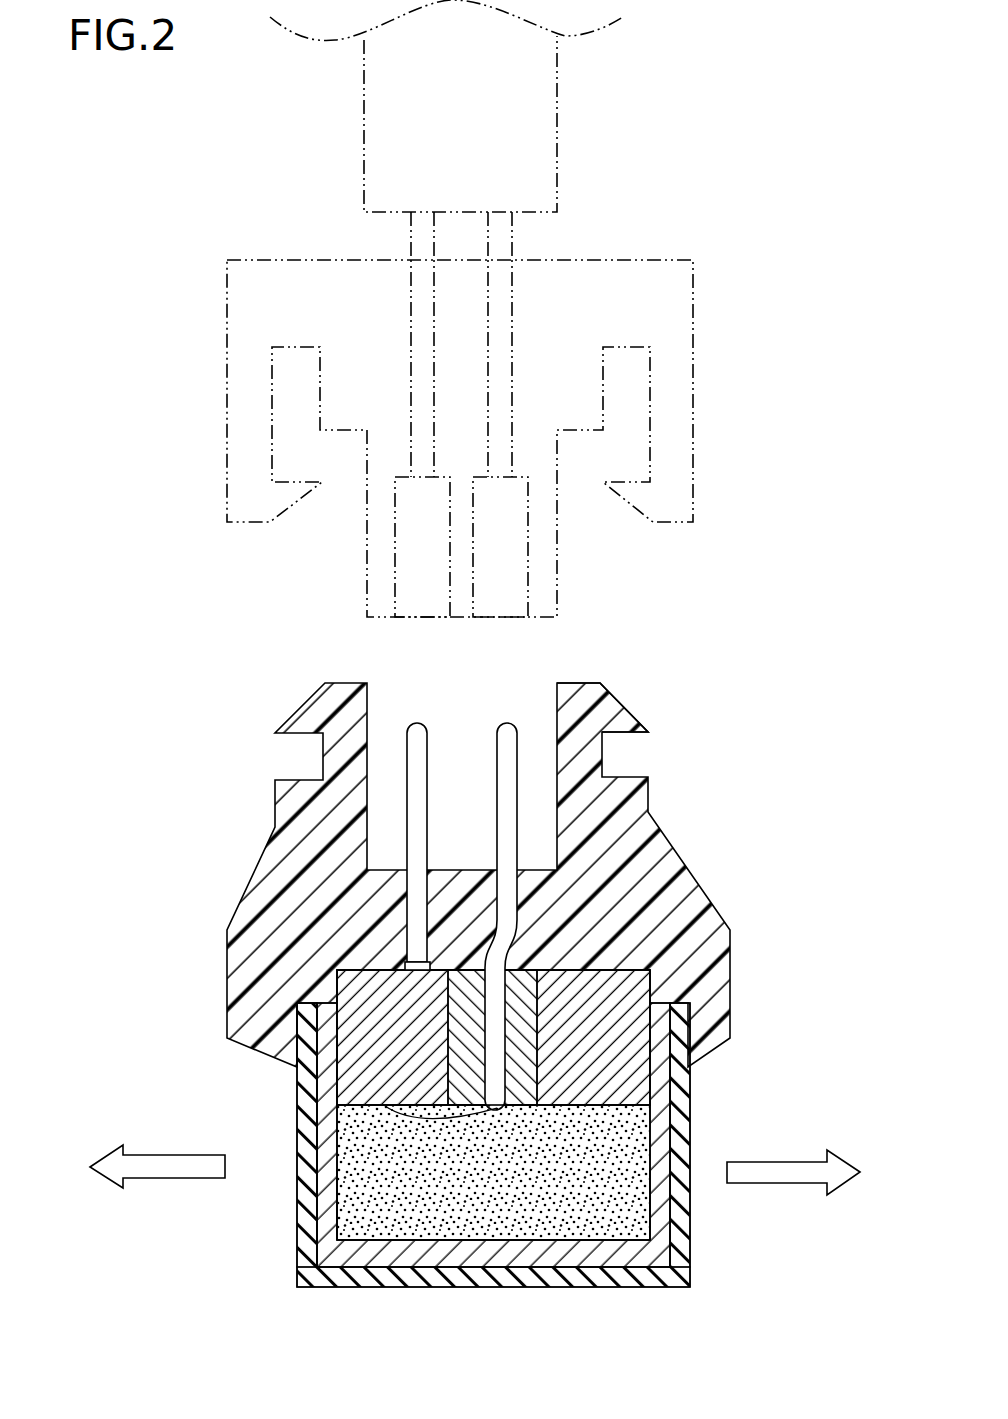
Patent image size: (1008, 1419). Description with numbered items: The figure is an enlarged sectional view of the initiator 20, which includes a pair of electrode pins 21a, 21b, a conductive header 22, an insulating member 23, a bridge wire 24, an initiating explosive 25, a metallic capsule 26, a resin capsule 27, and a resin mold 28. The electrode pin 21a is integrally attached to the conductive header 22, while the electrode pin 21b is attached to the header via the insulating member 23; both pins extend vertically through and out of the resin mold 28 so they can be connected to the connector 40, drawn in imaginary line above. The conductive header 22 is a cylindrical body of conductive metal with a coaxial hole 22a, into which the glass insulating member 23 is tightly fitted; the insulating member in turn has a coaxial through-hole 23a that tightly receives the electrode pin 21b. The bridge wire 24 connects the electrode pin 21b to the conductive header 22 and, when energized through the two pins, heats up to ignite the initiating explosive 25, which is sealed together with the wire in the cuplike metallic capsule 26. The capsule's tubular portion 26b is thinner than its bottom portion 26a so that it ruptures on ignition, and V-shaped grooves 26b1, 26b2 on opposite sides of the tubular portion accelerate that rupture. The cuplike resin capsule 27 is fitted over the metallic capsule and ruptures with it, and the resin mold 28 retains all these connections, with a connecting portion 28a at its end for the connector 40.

The initiator 20 is at (475, 995).
The electrode pin 21a is at (416, 733).
The electrode pin 21b is at (506, 733).
The conductive header 22 is at (628, 1002).
The hole 22a is at (528, 985).
The insulating member 23 is at (483, 968).
The through-hole 23a is at (495, 1028).
The bridge wire 24 is at (413, 1117).
The initiating explosive 25 is at (468, 1225).
The metallic capsule 26 is at (505, 1169).
The bottom portion 26a is at (556, 1260).
The tubular portion 26b is at (318, 1136).
The groove 26b1 is at (325, 1168).
The groove 26b2 is at (661, 1172).
The resin capsule 27 is at (613, 1280).
The resin mold 28 is at (268, 860).
The connecting portion 28a is at (618, 720).
The connector 40 is at (632, 247).